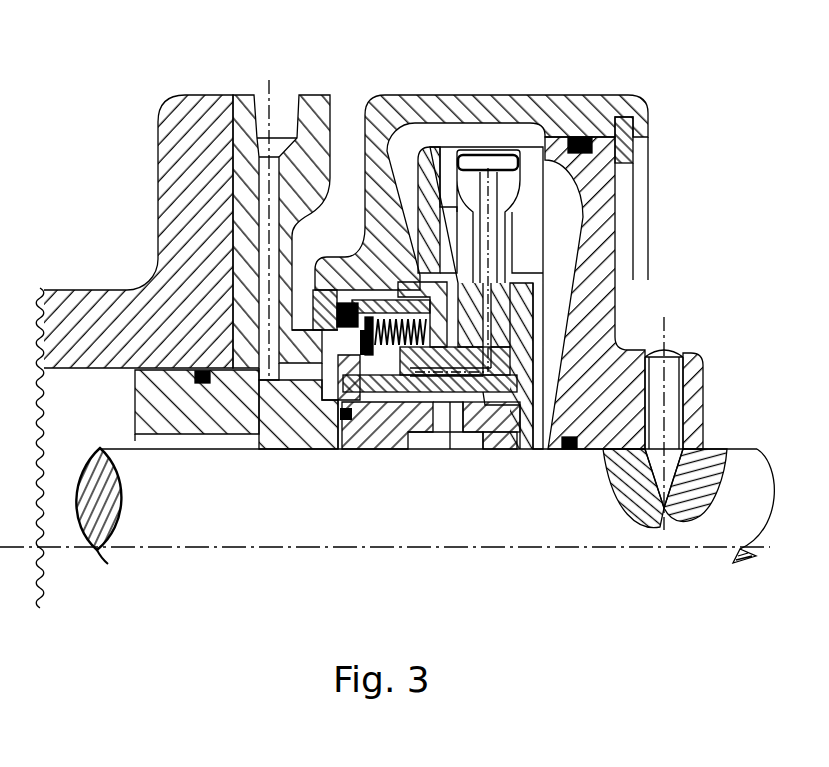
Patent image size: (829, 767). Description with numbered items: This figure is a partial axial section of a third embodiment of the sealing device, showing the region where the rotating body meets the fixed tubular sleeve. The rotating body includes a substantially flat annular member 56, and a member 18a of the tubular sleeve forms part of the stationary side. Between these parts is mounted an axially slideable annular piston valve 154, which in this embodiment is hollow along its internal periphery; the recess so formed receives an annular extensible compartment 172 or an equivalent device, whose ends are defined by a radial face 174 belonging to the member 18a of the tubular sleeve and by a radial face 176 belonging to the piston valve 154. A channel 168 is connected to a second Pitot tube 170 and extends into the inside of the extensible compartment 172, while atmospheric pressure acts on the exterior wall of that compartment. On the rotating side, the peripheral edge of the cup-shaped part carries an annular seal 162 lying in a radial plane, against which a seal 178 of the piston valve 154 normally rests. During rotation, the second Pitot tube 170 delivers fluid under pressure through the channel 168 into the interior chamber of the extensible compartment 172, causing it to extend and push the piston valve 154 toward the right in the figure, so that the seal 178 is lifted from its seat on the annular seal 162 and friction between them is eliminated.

The annular piston valve 154 is at (346, 253).
The annular member 56 is at (467, 98).
The annular seal 162 is at (332, 294).
The second Pitot tube 170 is at (492, 233).
The channel 168 is at (492, 327).
The seal 178 is at (363, 336).
The member of tubular sleeve 18a is at (225, 413).
The radial face 174 is at (336, 358).
The annular extensible compartment 172 is at (397, 392).
The radial face 176 is at (427, 350).